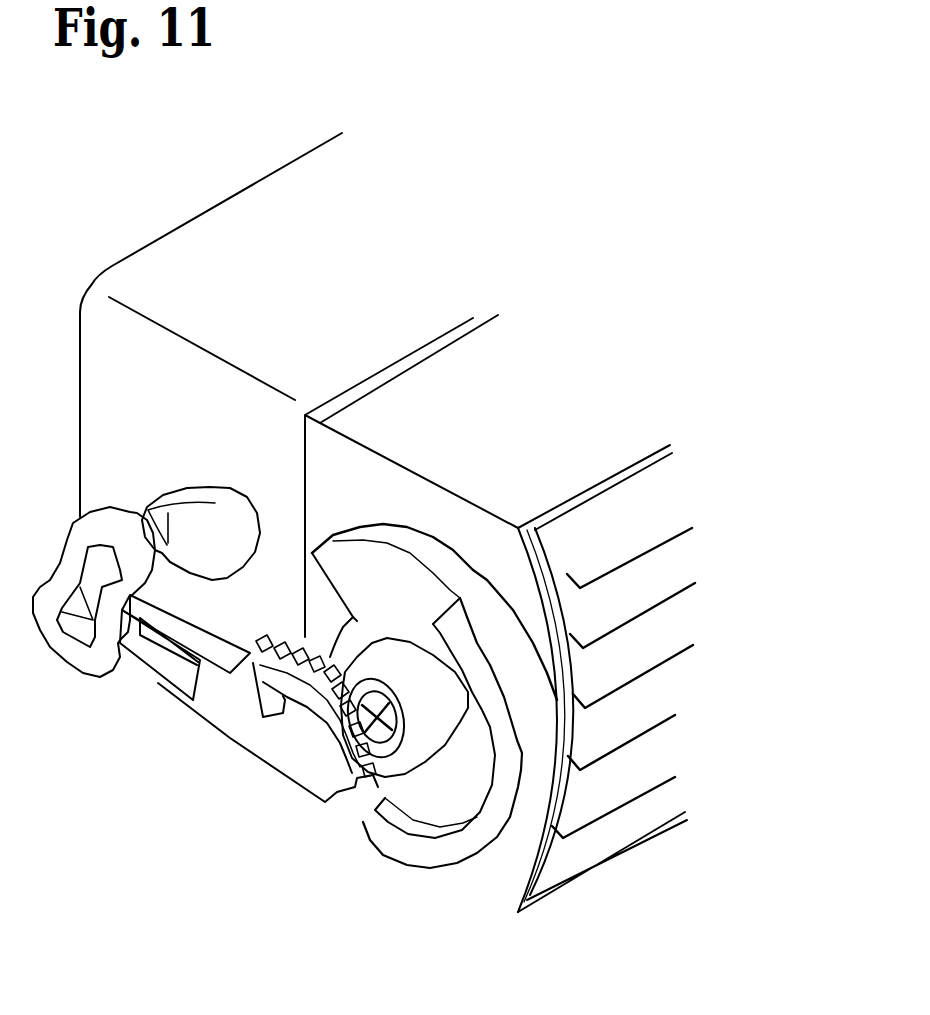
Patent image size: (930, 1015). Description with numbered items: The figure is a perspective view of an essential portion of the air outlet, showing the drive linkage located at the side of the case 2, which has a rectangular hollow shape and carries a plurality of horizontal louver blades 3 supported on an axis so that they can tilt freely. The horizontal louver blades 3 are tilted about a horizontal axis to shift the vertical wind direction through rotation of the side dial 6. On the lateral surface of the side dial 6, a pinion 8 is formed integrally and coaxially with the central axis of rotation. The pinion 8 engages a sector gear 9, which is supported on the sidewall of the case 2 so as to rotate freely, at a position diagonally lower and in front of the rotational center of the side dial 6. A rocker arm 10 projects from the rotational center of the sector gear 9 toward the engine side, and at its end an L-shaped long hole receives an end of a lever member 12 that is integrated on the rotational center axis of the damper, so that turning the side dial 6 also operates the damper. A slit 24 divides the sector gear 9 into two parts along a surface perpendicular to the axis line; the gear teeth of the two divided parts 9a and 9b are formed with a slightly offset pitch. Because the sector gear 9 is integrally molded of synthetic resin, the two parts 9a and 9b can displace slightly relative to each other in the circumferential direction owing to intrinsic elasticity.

The case 2 is at (187, 228).
The horizontal louver blades 3 is at (653, 718).
The side dial 6 is at (467, 853).
The pinion 8 is at (373, 780).
The sector gear 9 is at (307, 712).
The divided part of the sector gear 9a is at (275, 645).
The divided part of the sector gear 9b is at (334, 655).
The rocker arm 10 is at (178, 705).
The lever member 12 is at (185, 490).
The slit 24 is at (297, 640).